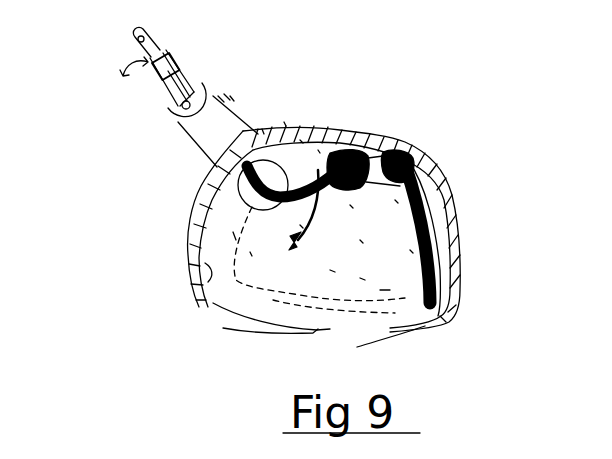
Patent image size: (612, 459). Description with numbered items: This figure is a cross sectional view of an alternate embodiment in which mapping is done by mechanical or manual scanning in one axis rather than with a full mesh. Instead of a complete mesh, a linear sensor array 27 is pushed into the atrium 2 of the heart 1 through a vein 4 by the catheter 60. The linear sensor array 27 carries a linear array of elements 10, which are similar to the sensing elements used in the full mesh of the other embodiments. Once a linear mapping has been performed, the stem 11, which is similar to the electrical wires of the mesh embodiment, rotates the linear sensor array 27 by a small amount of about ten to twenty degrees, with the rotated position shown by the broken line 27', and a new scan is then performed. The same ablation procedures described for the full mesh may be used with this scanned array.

The heart 1 is at (340, 130).
The atrium 2 is at (205, 263).
The vein 4 is at (233, 112).
The elements 10 is at (418, 193).
The stem 11 is at (140, 43).
The linear sensor array 27 is at (473, 234).
The rotated position of linear sensor array 27' is at (263, 284).
The catheter 60 is at (185, 68).